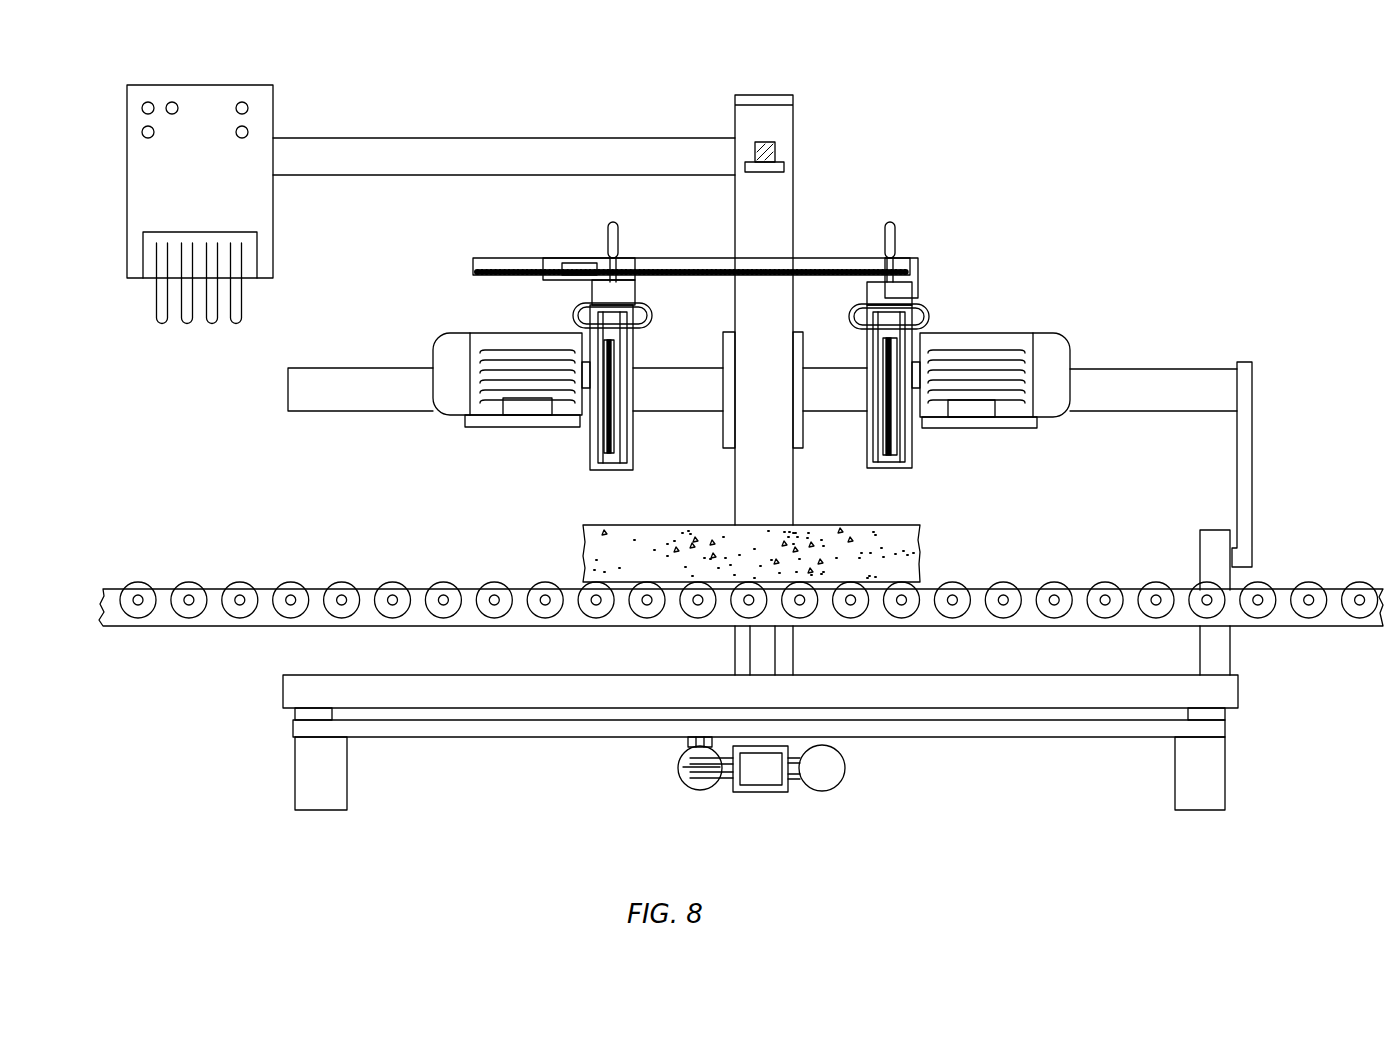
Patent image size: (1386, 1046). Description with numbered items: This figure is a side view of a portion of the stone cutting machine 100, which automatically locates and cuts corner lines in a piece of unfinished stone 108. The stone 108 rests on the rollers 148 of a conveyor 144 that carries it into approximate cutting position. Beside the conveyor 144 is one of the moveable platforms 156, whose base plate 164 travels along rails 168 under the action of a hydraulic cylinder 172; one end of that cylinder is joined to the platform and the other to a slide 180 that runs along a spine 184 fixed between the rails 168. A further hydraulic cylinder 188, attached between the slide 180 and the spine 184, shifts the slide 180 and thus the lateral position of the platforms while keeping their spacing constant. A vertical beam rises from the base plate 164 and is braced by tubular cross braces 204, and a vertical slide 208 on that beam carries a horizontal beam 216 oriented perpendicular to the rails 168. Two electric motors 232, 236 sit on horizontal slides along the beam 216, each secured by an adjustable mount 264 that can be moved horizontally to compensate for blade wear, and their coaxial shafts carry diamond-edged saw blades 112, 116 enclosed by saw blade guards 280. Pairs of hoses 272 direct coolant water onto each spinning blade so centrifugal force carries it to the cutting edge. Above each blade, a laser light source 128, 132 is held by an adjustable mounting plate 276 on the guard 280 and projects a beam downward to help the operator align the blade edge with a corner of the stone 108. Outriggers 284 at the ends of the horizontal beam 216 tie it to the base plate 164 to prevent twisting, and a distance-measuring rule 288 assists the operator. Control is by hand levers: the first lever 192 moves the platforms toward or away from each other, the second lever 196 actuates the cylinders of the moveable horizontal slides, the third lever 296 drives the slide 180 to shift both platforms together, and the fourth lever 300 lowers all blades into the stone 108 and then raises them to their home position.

The machine 100 is at (729, 462).
The stone 108 is at (910, 553).
The saw blade 112 is at (592, 453).
The saw blade 116 is at (888, 456).
The laser light source 128 is at (606, 232).
The laser light source 132 is at (893, 227).
The conveyor 144 is at (731, 552).
The rollers 148 is at (345, 588).
The platform 156 is at (754, 736).
The base plate 164 is at (297, 690).
The rails 168 is at (300, 713).
The hydraulic cylinder 172 is at (680, 768).
The slide 180 is at (738, 792).
The spine 184 is at (768, 778).
The hydraulic cylinder 188 is at (835, 777).
The first lever 192 is at (160, 324).
The second lever 196 is at (186, 326).
The cross braces 204 is at (765, 657).
The vertical slide 208 is at (798, 442).
The horizontal beam 216 is at (691, 403).
The electric motor 232 is at (481, 336).
The electric motor 236 is at (1011, 335).
The adjustable mount 264 is at (483, 424).
The hoses 272 is at (574, 315).
The adjustable mounting plate 276 is at (623, 281).
The saw blade guard 280 is at (598, 470).
The outrigger 284 is at (1243, 460).
The distance-measuring rule 288 is at (507, 264).
The third lever 296 is at (212, 326).
The fourth lever 300 is at (238, 325).